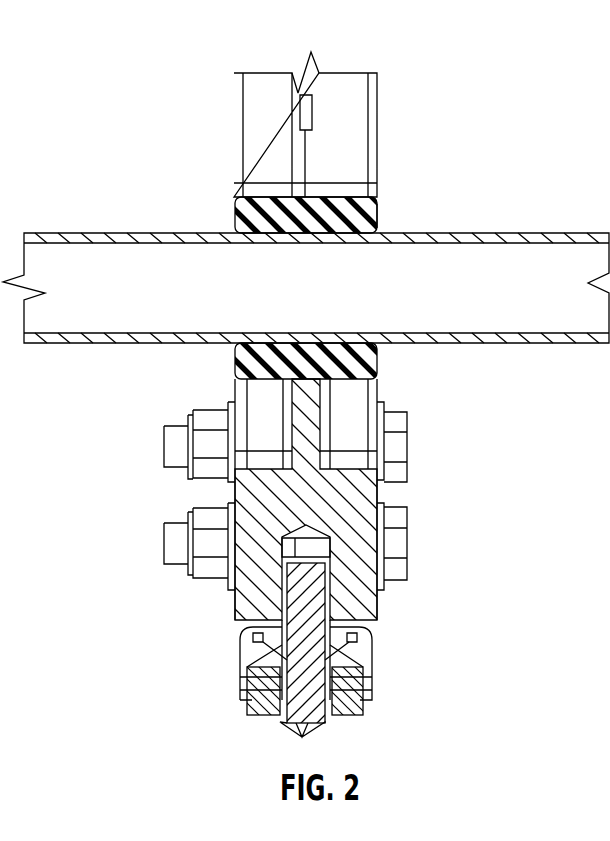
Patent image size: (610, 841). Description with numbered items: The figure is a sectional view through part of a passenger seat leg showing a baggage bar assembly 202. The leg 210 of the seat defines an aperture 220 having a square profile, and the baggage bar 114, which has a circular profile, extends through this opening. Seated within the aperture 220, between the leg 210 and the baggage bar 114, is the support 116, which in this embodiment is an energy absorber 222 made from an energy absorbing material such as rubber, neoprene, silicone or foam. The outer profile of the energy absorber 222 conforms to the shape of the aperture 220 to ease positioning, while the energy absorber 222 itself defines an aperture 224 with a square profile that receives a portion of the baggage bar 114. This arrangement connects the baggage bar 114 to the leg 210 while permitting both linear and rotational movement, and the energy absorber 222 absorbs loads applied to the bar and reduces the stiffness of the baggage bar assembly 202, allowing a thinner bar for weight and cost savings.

The baggage bar assembly 202 is at (98, 100).
The leg 210 is at (358, 158).
The aperture 220 is at (236, 198).
The energy absorber 222 is at (400, 220).
The baggage bar 114 is at (503, 343).
The aperture 224 is at (378, 345).
The support 116 is at (237, 352).